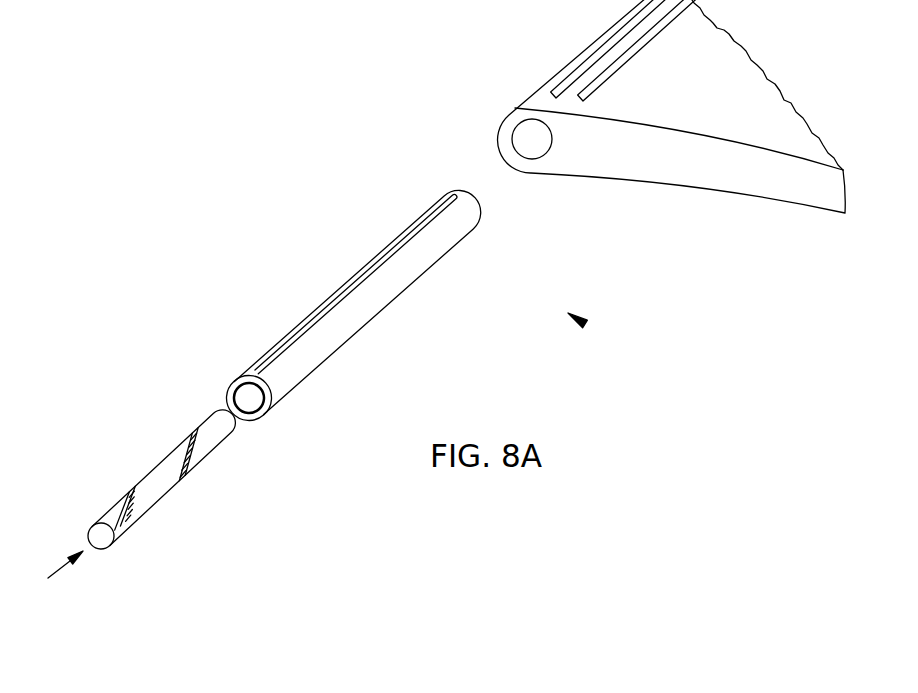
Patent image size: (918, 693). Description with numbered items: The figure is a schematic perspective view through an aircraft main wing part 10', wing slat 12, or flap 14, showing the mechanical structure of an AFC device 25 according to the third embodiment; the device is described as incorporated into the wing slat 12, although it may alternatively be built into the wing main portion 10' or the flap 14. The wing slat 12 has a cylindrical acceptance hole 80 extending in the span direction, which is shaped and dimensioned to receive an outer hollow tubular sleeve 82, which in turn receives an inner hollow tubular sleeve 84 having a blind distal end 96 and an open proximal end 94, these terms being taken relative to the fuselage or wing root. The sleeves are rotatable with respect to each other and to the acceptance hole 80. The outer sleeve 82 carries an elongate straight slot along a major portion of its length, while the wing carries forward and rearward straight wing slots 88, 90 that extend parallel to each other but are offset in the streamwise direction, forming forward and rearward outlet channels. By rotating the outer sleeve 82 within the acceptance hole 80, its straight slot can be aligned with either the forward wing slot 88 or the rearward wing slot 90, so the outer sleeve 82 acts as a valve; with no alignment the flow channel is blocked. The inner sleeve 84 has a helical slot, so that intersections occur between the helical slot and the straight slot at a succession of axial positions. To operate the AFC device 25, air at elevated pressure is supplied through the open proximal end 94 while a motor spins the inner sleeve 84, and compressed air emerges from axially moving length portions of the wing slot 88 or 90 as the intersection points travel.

The wing main portion 10' is at (672, 122).
The wing slat 12 is at (672, 122).
The flap 14 is at (672, 122).
The AFC device 25 is at (586, 325).
The acceptance hole 80 is at (533, 160).
The outer hollow tubular sleeve 82 is at (353, 305).
The inner hollow tubular sleeve 84 is at (170, 506).
The forward wing slot 88 is at (562, 69).
The rearward wing slot 90 is at (628, 57).
The open proximal end 94 is at (98, 550).
The blind distal end 96 is at (233, 427).